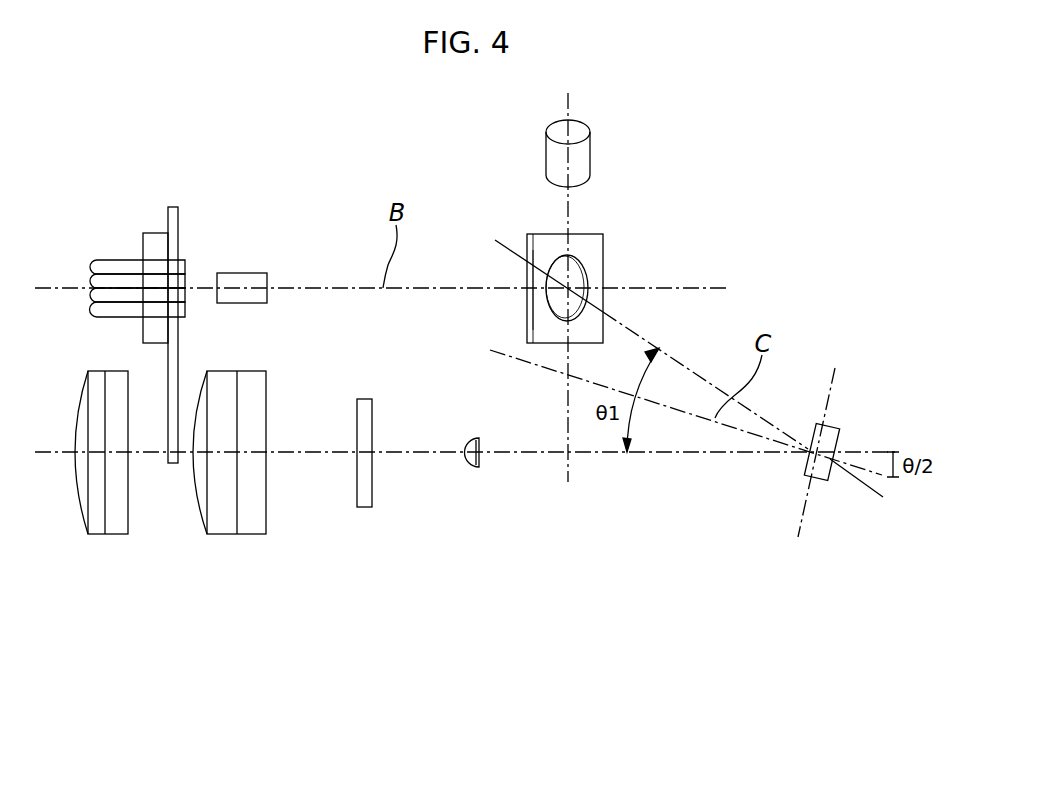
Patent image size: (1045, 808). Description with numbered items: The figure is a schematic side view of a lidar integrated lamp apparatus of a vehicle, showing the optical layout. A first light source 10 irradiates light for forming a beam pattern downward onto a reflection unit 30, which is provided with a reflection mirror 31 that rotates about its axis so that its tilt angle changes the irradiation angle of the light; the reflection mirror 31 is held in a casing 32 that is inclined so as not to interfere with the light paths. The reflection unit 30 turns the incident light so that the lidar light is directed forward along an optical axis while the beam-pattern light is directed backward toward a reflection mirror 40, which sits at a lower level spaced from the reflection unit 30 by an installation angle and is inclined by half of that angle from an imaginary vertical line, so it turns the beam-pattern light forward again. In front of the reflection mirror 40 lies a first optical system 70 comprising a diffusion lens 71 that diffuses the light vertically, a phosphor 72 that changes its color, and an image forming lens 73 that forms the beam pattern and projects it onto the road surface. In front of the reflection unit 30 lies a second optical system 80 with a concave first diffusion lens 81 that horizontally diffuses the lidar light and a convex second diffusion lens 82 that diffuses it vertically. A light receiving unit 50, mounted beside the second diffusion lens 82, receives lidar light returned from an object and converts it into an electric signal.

The first light source 10 is at (585, 153).
The reflection unit 30 is at (562, 248).
The reflection mirror 31 is at (573, 275).
The casing 32 is at (535, 317).
The reflection mirror 40 is at (838, 425).
The light receiving unit 50 is at (148, 233).
The first optical system 70 is at (277, 544).
The diffusion lens 71 is at (431, 549).
The phosphor 72 is at (363, 492).
The image forming lens 73 is at (122, 522).
The second optical system 80 is at (202, 305).
The first diffusion lens 81 is at (220, 178).
The second diffusion lens 82 is at (178, 265).